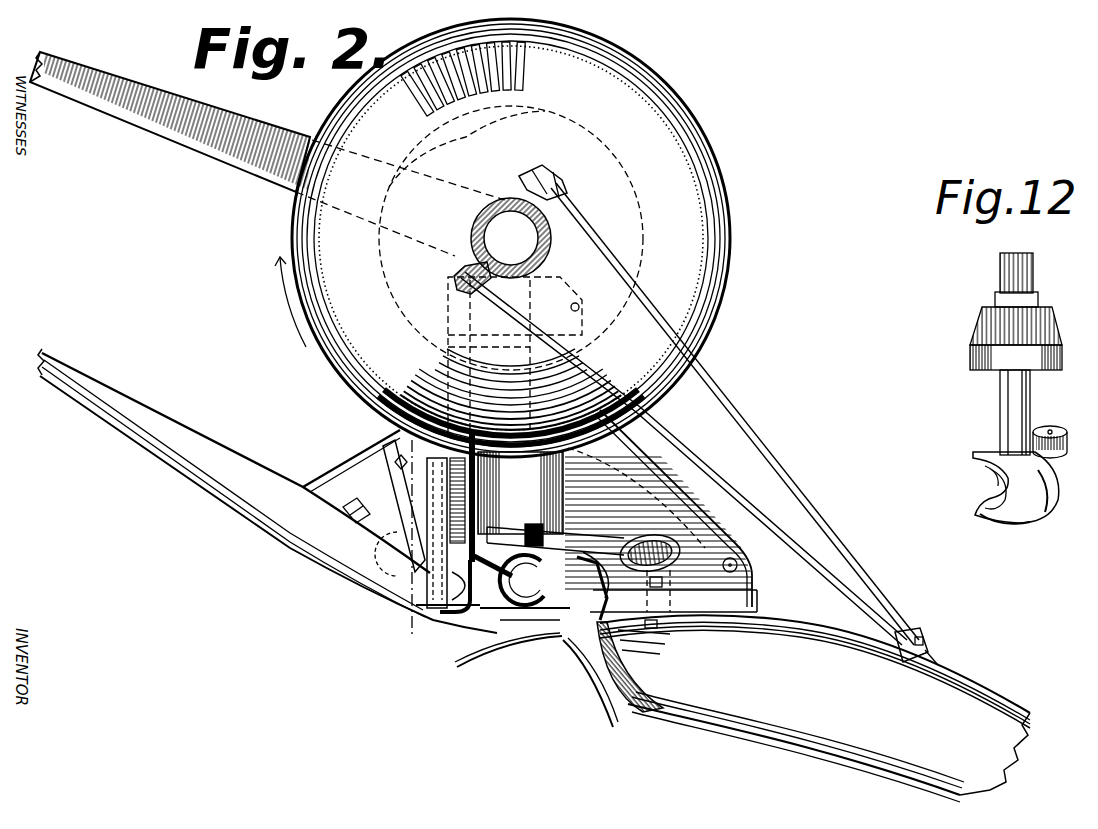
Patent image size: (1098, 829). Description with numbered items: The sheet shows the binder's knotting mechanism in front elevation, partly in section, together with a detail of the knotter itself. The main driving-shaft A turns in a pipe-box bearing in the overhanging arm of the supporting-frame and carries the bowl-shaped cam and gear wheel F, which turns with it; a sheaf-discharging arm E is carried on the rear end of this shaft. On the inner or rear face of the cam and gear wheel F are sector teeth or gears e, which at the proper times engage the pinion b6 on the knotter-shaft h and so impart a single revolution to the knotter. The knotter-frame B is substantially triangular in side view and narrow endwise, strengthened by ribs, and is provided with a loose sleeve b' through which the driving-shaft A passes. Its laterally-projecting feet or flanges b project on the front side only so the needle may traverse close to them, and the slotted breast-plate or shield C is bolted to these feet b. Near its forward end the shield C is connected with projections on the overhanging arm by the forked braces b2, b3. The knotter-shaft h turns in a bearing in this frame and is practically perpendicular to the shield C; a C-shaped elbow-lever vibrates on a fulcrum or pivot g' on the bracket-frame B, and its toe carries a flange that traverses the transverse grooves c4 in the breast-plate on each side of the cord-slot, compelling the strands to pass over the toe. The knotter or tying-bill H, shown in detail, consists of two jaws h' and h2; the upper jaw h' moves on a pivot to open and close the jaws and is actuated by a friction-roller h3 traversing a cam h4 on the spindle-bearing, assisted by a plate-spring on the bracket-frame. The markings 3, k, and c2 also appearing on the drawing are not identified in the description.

In FIG. 2, the sheaf-discharging arm E is at (267, 154).
In FIG. 2, the sector-gear e is at (523, 60).
In FIG. 2, the cam and gear wheel F is at (597, 150).
In FIG. 2, the main driving-shaft A is at (515, 299).
In FIG. 2, the forked brace b3 is at (744, 424).
In FIG. 2, the forked brace b2 is at (684, 458).
In FIG. 2, the section line 3 is at (410, 440).
In FIG. 2, the knotter-frame B is at (668, 496).
In FIG. 2, the feet or flanges b is at (524, 533).
In FIG. 2, the loose sleeve b' is at (404, 506).
In FIG. 2, the cam h4 is at (555, 539).
In FIG. 2, the knotter or tying-bill H is at (509, 580).
In FIG. 12, the knotter or tying-bill H is at (1011, 487).
In FIG. 2, the bracket k is at (464, 586).
In FIG. 2, the upper jaw h' is at (544, 586).
In FIG. 12, the upper jaw h' is at (992, 480).
In FIG. 2, the fulcrum or pivot g' is at (508, 658).
In FIG. 2, the transverse grooves c4 is at (560, 645).
In FIG. 2, the breast-plate or shield C is at (815, 699).
In FIG. 2, the frame flange c2 is at (639, 713).
In FIG. 12, the pinion b6 is at (1027, 311).
In FIG. 12, the knotter-shaft h is at (1024, 412).
In FIG. 12, the friction-roller h3 is at (1063, 446).
In FIG. 12, the lower jaw h2 is at (1005, 530).